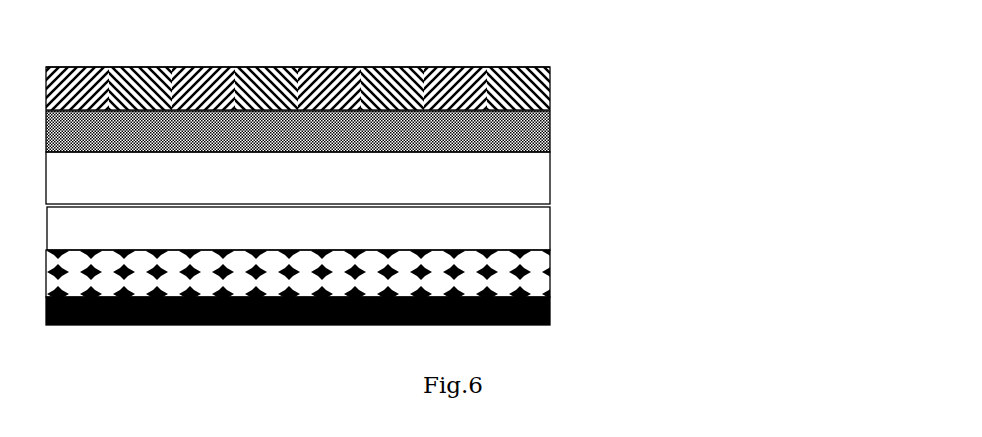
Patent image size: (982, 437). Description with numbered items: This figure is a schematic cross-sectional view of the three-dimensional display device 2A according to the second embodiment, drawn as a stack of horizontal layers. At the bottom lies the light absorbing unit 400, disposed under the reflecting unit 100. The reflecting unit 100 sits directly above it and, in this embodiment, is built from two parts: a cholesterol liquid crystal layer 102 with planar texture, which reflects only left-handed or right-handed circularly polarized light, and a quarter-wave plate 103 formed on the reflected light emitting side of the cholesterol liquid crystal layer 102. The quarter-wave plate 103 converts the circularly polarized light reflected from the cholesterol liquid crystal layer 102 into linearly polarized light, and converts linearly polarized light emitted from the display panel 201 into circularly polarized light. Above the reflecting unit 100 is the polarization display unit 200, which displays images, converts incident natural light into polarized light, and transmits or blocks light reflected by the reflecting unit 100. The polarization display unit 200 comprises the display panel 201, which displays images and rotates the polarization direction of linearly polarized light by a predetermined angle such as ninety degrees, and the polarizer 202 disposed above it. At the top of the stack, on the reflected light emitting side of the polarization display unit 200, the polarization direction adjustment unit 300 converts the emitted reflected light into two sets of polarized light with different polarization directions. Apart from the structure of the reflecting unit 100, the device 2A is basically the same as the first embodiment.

The polarization direction adjustment unit 300 is at (550, 91).
The 3D display device 2A is at (518, 67).
The polarization display unit 200 is at (384, 157).
The polarizer 202 is at (550, 126).
The display panel 201 is at (545, 182).
The reflecting unit 100 is at (376, 254).
The λ/4 wave plate 103 is at (550, 225).
The cholesterol liquid crystal layer 102 is at (548, 268).
The light absorbing unit 400 is at (550, 314).